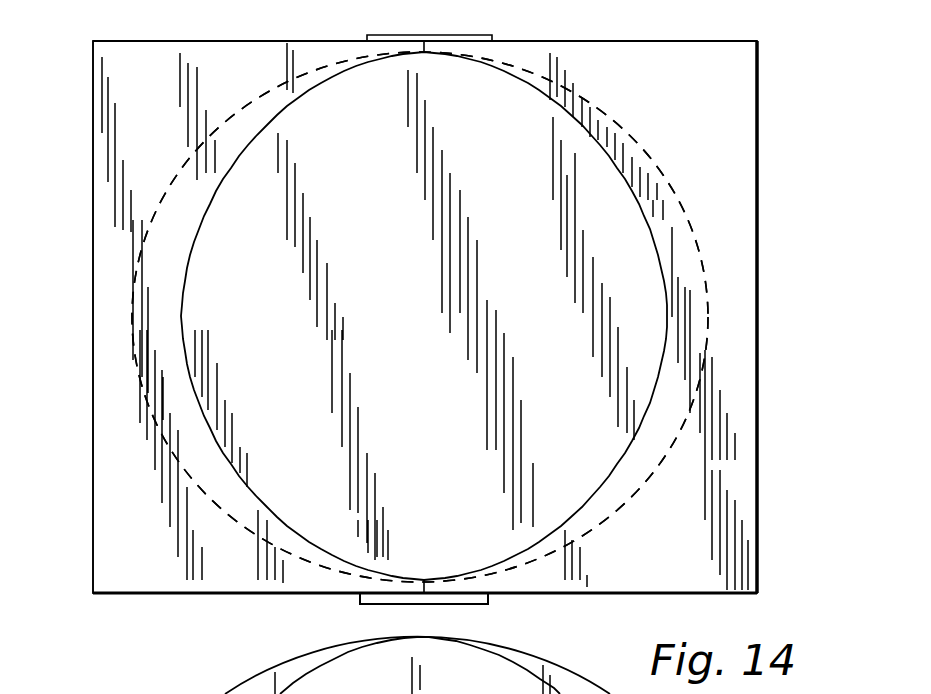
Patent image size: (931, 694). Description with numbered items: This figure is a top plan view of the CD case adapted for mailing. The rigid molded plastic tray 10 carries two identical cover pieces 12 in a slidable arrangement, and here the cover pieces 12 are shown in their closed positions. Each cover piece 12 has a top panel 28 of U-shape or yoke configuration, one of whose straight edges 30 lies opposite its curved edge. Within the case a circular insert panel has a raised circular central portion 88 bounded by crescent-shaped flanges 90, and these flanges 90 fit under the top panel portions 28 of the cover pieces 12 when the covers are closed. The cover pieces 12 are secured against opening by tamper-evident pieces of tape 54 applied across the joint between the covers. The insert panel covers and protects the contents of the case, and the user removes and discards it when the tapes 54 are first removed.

The tray 10 is at (778, 123).
The cover piece 12 is at (90, 446).
The top panel 28 is at (125, 140).
The straight edge 30 is at (688, 293).
The tamper-evident tape 54 is at (483, 38).
The raised circular central portion 88 is at (416, 255).
The crescent-shaped flange 90 is at (160, 262).